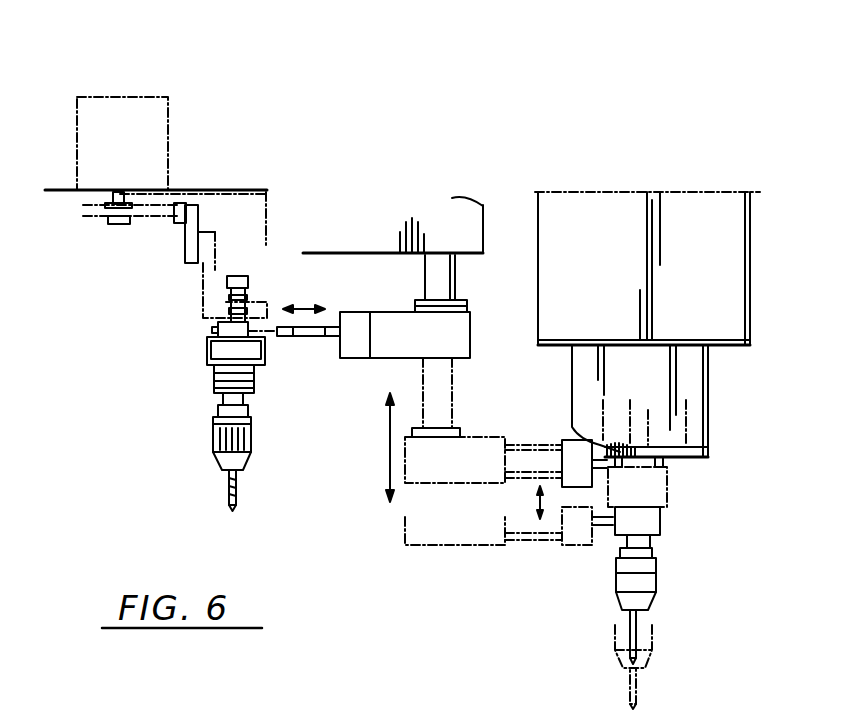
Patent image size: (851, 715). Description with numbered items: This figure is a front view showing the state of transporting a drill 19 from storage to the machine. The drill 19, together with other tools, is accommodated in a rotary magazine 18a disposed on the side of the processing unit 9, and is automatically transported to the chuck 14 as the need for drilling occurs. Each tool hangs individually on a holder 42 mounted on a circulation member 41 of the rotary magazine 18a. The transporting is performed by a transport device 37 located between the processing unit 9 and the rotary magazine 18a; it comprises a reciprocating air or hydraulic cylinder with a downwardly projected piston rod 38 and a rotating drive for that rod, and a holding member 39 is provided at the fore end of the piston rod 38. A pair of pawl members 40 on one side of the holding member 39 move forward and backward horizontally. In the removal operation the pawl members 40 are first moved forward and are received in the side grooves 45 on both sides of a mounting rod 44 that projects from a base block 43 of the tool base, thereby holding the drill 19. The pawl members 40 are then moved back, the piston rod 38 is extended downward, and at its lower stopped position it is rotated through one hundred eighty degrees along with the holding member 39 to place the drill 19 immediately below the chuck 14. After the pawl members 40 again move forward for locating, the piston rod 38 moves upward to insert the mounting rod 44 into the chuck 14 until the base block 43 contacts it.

The rotary magazine 18a is at (148, 97).
The circulation member 41 is at (176, 232).
The holder 42 is at (205, 297).
The mounting rod 44 is at (240, 294).
The side grooves 45 is at (217, 330).
The base block 43 is at (216, 352).
The drill 19 is at (234, 495).
The transport device 37 is at (442, 228).
The piston rod 38 is at (442, 279).
The holding member 39 is at (455, 330).
The pawl members 40 is at (318, 340).
The processing unit 9 is at (730, 277).
The chuck 14 is at (693, 390).